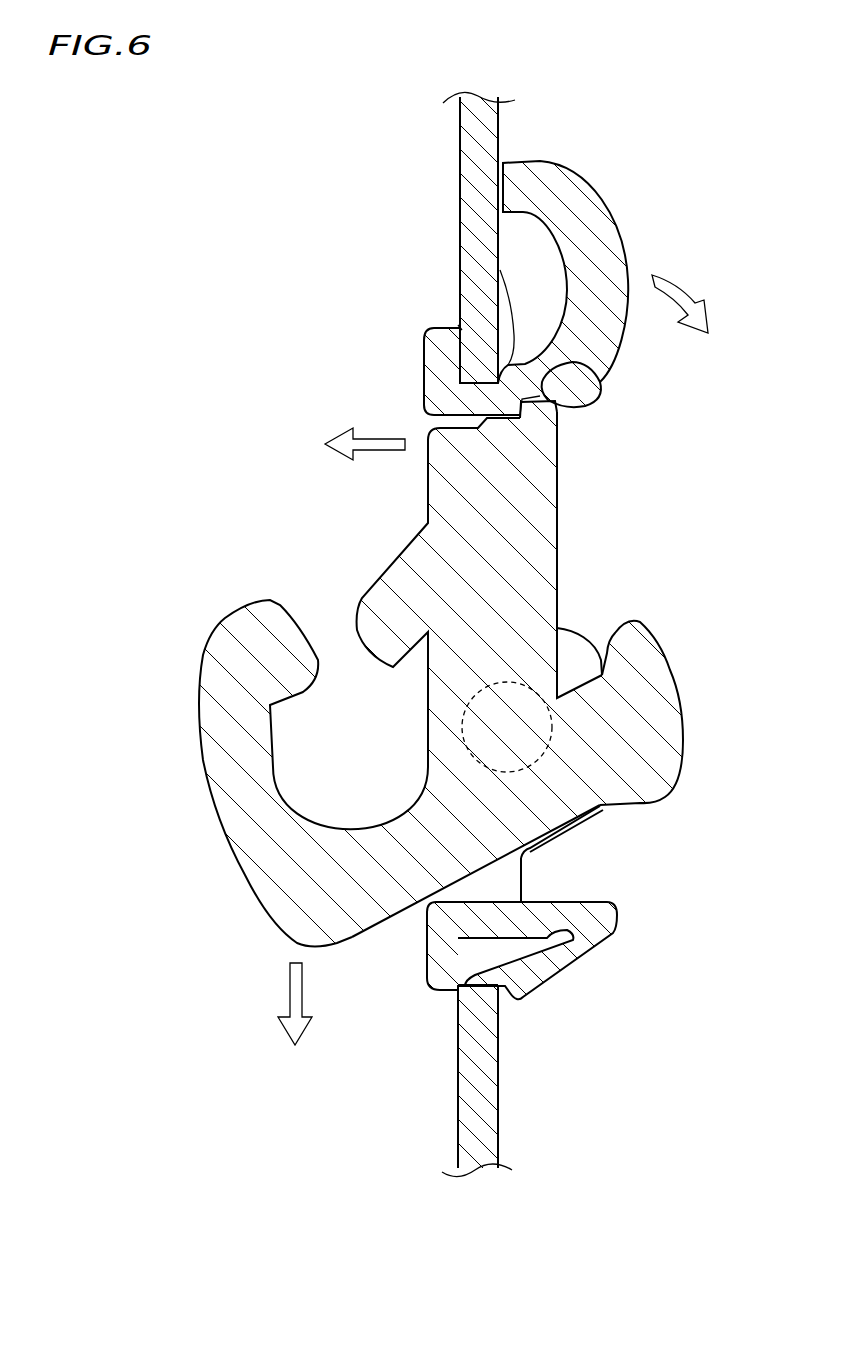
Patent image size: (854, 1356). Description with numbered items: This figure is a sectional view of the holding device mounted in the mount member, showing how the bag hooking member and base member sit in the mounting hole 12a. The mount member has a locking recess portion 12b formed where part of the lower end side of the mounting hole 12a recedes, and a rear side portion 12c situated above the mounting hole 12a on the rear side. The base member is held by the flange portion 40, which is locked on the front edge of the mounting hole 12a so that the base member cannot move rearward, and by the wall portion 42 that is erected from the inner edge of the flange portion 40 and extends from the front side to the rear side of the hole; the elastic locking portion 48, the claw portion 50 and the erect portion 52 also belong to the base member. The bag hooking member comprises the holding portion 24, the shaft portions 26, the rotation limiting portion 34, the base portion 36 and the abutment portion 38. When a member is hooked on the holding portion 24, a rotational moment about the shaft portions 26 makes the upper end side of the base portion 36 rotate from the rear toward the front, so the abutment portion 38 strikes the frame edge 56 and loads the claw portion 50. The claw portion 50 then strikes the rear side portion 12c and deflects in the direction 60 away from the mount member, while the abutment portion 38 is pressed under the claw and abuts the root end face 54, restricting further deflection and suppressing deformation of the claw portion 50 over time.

The rear side portion 12c is at (477, 145).
The locking recess portion 12b is at (497, 1062).
The mounting hole 12a is at (458, 325).
The claw portion 50 is at (586, 238).
The erect portion 52 is at (500, 270).
The root end face 54 is at (544, 374).
The frame edge 56 is at (510, 402).
The flange portion 40 is at (423, 349).
The abutment portion 38 is at (557, 418).
The base portion 36 is at (535, 555).
The wall portion 42 is at (577, 637).
The rotation limiting portion 34 is at (636, 640).
The shaft portions 26 is at (555, 730).
The holding portion 24 is at (227, 770).
The elastic locking portion 48 is at (560, 970).
The direction 60 is at (680, 285).